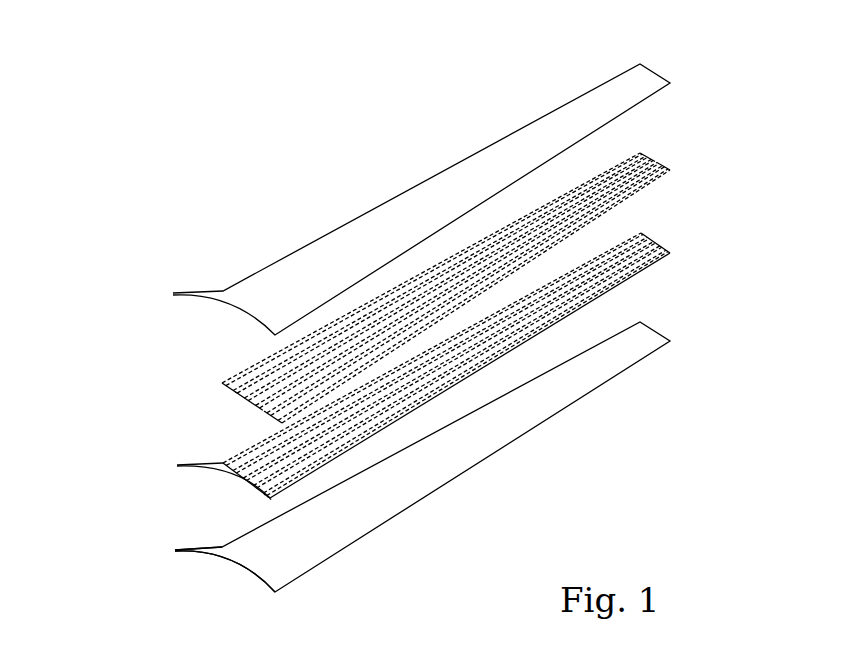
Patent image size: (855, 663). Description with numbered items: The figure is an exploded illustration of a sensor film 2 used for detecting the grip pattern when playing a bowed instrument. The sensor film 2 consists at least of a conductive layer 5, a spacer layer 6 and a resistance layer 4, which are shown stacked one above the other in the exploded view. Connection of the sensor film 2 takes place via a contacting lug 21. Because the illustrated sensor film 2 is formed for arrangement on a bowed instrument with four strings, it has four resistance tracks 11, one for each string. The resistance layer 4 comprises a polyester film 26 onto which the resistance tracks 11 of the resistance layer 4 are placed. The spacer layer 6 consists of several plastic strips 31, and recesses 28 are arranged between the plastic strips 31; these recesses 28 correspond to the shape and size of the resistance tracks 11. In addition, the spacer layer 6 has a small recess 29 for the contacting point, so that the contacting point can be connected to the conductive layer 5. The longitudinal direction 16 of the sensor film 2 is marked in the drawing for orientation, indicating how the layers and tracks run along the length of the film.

The sensor film 2 is at (243, 200).
The conductive layer 5 is at (670, 83).
The resistance layer 4 is at (667, 182).
The resistance tracks 11 is at (640, 153).
The spacer layer 6 is at (673, 260).
The plastic strips 31 is at (641, 233).
The polyester film 26 is at (670, 341).
The longitudinal direction 16 is at (558, 452).
The recesses 28 is at (248, 453).
The small recess 29 is at (270, 498).
The contacting lug 21 is at (178, 549).